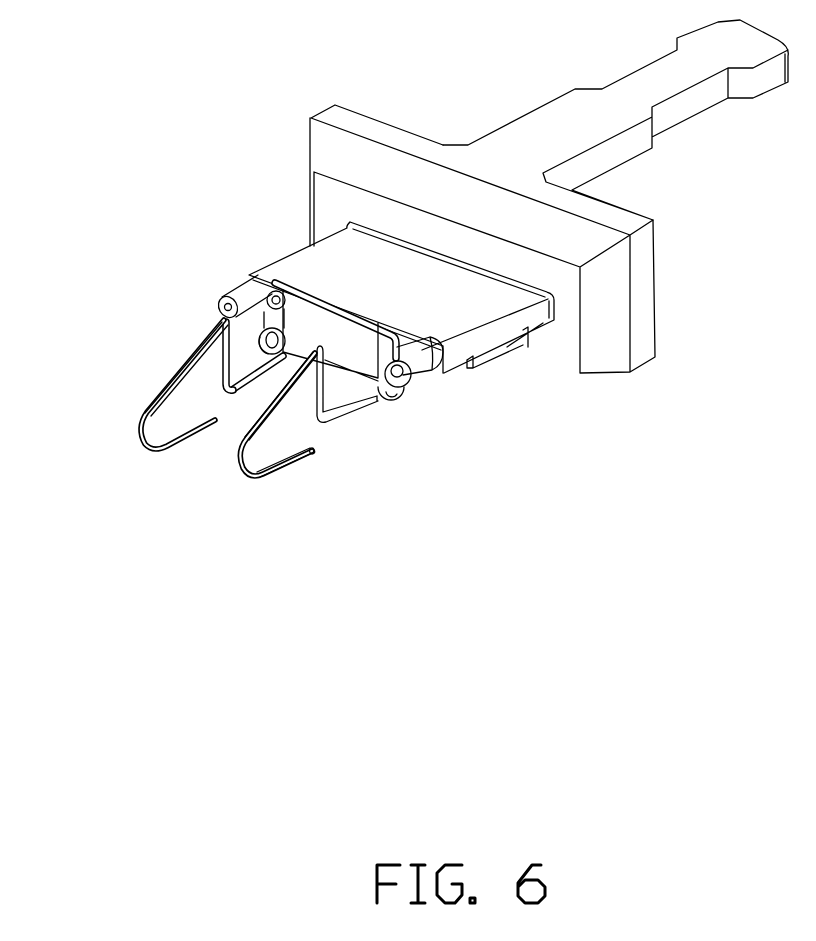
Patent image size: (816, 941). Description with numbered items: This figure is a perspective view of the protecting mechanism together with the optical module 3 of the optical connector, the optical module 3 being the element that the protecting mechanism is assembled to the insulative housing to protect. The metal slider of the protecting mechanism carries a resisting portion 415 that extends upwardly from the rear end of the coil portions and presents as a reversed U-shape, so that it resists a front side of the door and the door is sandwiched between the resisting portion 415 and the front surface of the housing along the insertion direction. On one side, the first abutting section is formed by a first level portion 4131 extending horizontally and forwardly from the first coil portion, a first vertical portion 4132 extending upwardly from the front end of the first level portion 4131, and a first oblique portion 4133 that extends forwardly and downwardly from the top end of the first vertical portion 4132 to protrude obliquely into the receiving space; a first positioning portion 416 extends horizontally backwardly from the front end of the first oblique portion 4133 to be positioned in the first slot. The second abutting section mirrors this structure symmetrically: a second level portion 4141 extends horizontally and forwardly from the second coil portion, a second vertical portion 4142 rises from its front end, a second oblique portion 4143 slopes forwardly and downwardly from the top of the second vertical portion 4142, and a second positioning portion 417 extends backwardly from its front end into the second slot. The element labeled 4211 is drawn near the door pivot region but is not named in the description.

The optical module 3 is at (345, 253).
The resisting portion 415 is at (312, 307).
The second level portion 4141 is at (262, 295).
The second vertical portion 4142 is at (224, 352).
The second oblique portion 4143 is at (167, 382).
The second positioning portion 417 is at (133, 419).
The first positioning portion 416 is at (332, 453).
The first level portion 4131 is at (362, 407).
The first vertical portion 4132 is at (265, 417).
The first oblique portion 4133 is at (305, 455).
The pivot shaft 4211 is at (367, 353).